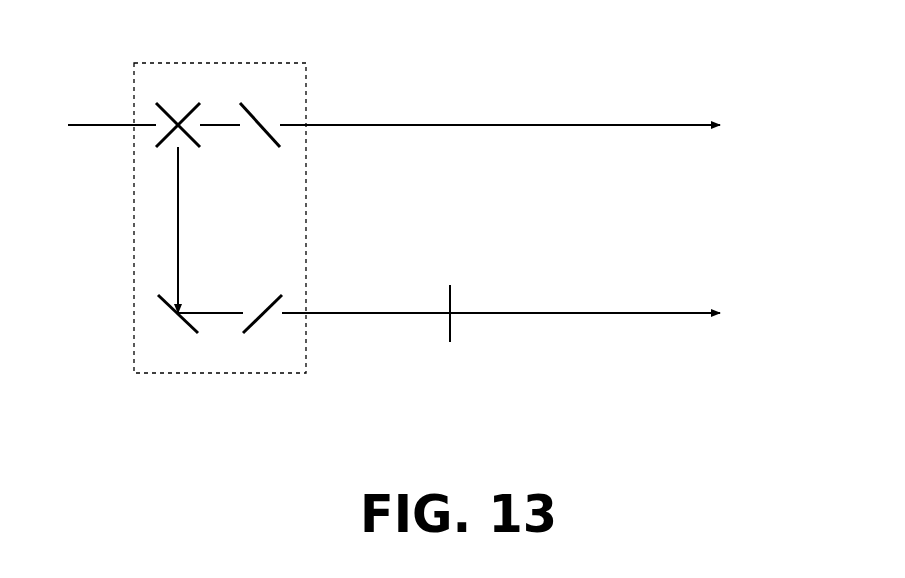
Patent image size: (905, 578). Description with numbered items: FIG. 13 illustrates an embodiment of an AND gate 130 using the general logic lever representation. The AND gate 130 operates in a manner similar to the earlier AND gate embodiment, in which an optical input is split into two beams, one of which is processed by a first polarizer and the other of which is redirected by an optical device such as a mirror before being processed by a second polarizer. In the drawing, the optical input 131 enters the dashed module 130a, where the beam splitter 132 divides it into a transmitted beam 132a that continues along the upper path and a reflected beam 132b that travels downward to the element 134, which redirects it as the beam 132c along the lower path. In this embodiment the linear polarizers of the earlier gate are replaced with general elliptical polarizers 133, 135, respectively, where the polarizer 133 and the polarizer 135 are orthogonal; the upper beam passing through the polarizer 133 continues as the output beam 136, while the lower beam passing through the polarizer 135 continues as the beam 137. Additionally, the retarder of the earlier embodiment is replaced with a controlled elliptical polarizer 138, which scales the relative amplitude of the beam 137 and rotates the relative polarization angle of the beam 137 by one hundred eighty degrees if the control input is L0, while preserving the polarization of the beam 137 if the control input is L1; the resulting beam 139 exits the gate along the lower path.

The AND gate 130 is at (434, 194).
The optical module 130a is at (157, 62).
The input beam 131 is at (121, 123).
The polarizing beam splitter 132 is at (172, 112).
The transmitted beam 132a is at (193, 128).
The reflected beam 132b is at (187, 183).
The redirected beam 132c is at (200, 312).
The general elliptical polarizer 133 is at (280, 93).
The mirror 134 is at (173, 328).
The general elliptical polarizer 135 is at (283, 343).
The first output beam 136 is at (350, 127).
The beam 137 is at (353, 312).
The controlled elliptical polarizer 138 is at (453, 295).
The second output beam 139 is at (585, 308).